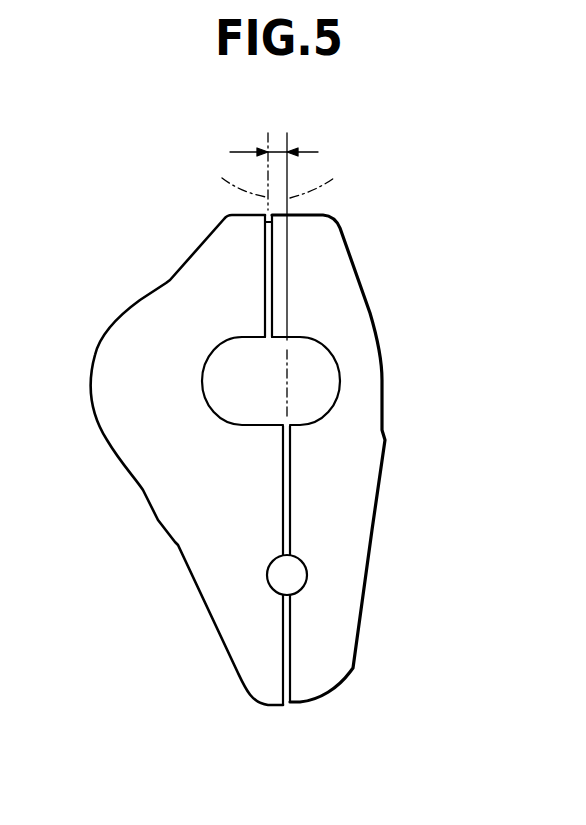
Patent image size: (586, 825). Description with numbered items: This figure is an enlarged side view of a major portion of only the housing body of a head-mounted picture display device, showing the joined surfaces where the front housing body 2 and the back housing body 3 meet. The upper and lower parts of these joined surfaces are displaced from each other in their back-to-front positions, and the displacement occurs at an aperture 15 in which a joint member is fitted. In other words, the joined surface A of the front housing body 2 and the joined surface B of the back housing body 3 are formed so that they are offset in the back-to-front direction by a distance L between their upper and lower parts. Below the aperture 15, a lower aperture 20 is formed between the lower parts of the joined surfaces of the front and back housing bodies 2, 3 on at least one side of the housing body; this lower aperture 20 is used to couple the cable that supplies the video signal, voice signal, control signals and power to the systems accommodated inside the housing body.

The front housing body 2 is at (150, 318).
The back housing body 3 is at (350, 305).
The aperture 15 is at (320, 392).
The lower aperture 20 is at (295, 578).
The joined surface of the front housing body A is at (230, 171).
The joined surface of the back housing body B is at (321, 276).
The distance L is at (276, 150).